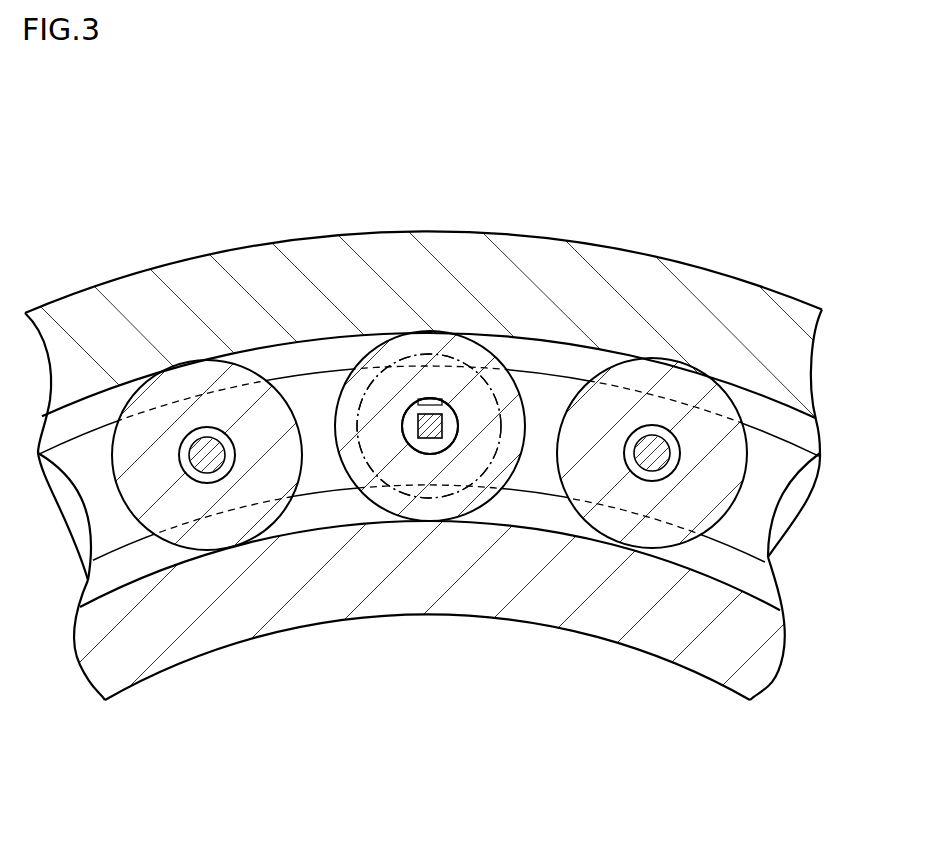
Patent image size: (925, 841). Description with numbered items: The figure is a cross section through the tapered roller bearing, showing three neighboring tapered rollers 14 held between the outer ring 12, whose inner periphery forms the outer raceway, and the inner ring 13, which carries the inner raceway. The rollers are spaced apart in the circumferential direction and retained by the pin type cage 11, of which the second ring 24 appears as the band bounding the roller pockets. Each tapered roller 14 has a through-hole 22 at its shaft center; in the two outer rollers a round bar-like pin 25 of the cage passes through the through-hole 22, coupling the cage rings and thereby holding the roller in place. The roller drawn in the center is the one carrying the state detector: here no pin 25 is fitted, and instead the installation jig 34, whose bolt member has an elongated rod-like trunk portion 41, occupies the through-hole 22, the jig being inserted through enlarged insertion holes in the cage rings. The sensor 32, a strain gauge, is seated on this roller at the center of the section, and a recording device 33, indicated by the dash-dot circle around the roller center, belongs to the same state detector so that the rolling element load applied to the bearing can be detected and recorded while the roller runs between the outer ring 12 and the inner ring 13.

The pin type cage 11 is at (784, 427).
The outer ring 12 is at (440, 231).
The inner ring 13 is at (335, 623).
The tapered roller 14 is at (203, 530).
The through-hole 22 is at (217, 447).
The second ring 24 is at (763, 427).
The pin 25 is at (188, 440).
The sensor 32 is at (430, 398).
The recording device 33 is at (360, 398).
The installation jig 34 is at (408, 324).
The trunk portion 41 is at (412, 423).